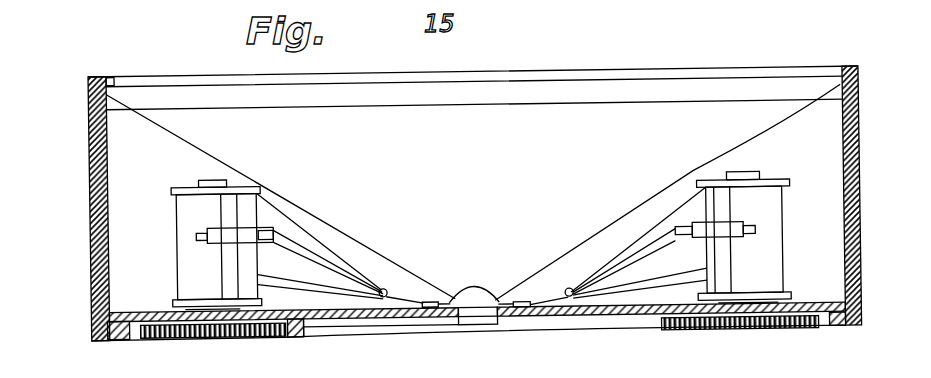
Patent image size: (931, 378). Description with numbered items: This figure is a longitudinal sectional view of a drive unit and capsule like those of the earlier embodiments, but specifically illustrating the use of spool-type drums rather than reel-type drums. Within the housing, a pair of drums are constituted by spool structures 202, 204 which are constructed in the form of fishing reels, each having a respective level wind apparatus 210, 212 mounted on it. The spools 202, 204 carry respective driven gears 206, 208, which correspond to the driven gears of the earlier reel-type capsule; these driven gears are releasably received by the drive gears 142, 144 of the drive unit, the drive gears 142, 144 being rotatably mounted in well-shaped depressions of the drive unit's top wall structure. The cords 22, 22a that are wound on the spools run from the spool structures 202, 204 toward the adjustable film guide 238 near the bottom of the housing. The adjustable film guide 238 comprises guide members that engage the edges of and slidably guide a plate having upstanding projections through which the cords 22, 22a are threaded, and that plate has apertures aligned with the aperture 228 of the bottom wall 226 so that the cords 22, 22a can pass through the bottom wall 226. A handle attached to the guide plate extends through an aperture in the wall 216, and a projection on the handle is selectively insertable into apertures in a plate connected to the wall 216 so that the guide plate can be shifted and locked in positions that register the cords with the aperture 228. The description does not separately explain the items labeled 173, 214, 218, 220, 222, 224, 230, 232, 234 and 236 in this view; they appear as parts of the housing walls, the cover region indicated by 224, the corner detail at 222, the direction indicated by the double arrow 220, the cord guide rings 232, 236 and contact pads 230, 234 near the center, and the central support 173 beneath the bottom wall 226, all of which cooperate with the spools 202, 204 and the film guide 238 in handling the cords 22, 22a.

The cord 22 is at (342, 282).
The cord 22a is at (284, 278).
The drive gear 142 is at (283, 343).
The drive gear 144 is at (816, 340).
The central support block 173 is at (468, 327).
The spool structure 202 is at (186, 184).
The spool structure 204 is at (764, 178).
The driven gear 206 is at (172, 345).
The driven gear 208 is at (715, 338).
The level wind apparatus 210 is at (212, 230).
The level wind apparatus 212 is at (735, 238).
The housing 214 is at (90, 247).
The wall 216 is at (827, 168).
The left housing wall 218 is at (90, 168).
The vertical travel direction 220 is at (75, 98).
The corner seal 222 is at (105, 77).
The cover plate 224 is at (228, 100).
The bottom wall 226 is at (292, 230).
The aperture 228 is at (487, 330).
The left contact pad 230 is at (418, 300).
The left guide ring 232 is at (387, 292).
The right contact pad 234 is at (560, 300).
The right guide ring 236 is at (567, 292).
The adjustable film guide 238 is at (418, 334).